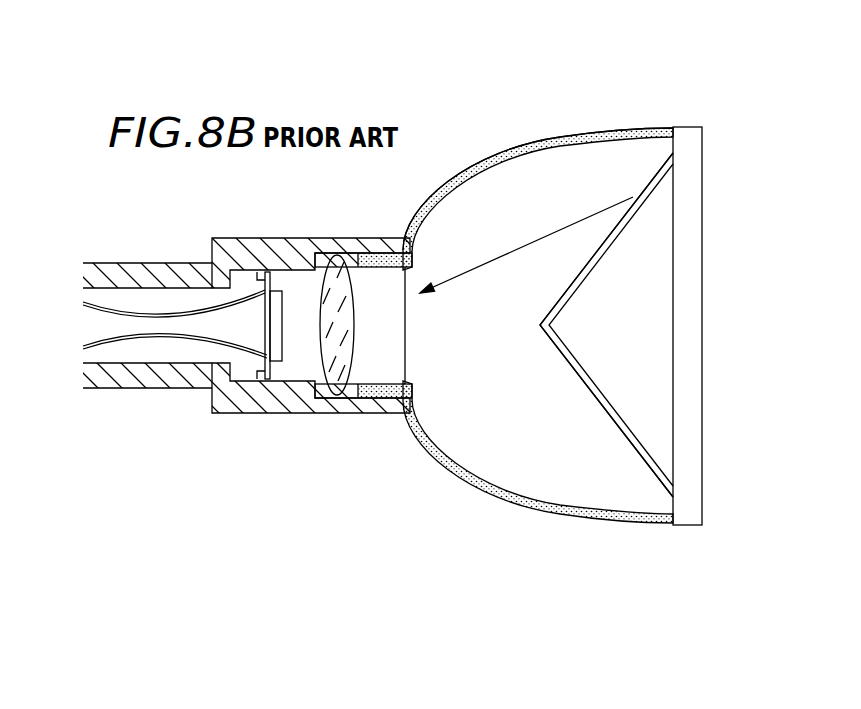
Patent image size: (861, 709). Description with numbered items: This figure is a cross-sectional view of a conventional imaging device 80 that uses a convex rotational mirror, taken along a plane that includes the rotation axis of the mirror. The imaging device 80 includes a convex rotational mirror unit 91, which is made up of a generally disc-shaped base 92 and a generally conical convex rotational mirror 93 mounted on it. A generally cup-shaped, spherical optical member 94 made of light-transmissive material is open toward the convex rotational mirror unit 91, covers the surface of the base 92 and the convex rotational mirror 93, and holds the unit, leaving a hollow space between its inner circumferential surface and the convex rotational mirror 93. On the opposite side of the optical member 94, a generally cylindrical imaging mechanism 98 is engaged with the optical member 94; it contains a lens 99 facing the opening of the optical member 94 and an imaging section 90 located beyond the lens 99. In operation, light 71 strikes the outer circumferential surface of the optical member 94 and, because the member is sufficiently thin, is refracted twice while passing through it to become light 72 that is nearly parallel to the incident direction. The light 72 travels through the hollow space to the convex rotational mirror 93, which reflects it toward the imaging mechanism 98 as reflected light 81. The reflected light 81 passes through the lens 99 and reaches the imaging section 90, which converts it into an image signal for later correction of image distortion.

The imaging device 80 is at (567, 329).
The light 71 is at (641, 128).
The light 72 is at (637, 195).
The reflected light 81 is at (497, 260).
The imaging section 90 is at (268, 325).
The lens 99 is at (323, 359).
The imaging mechanism 98 is at (317, 367).
The optical member 94 is at (520, 317).
The convex rotational mirror 93 is at (606, 341).
The base 92 is at (693, 527).
The convex rotational mirror unit 91 is at (625, 361).